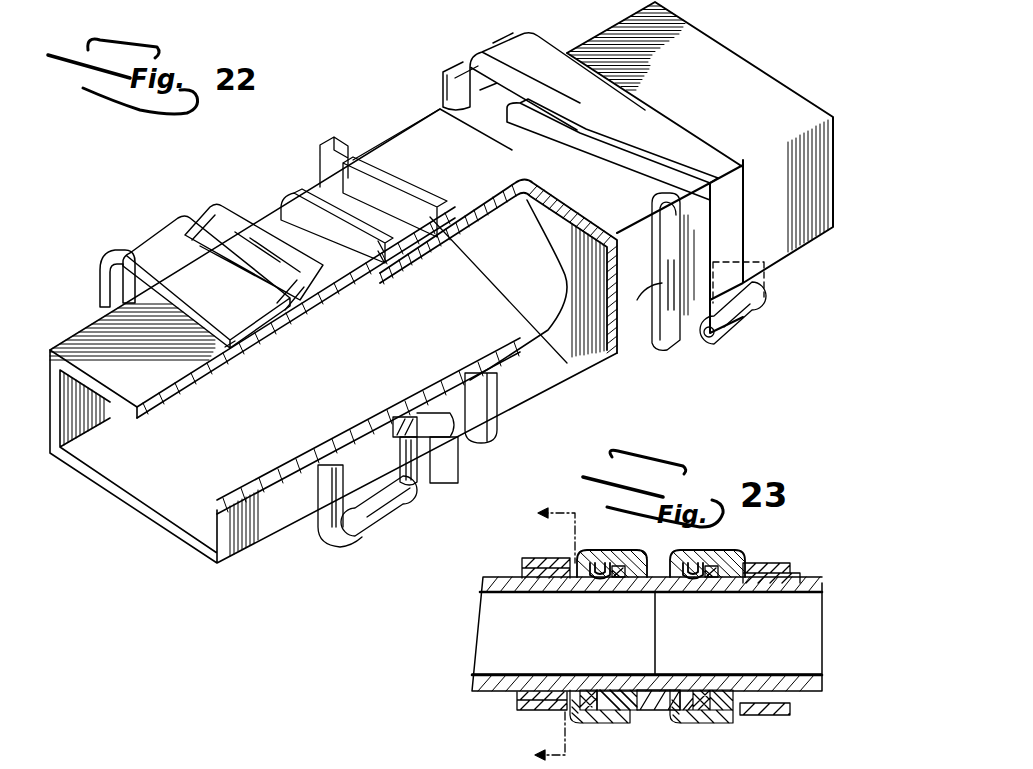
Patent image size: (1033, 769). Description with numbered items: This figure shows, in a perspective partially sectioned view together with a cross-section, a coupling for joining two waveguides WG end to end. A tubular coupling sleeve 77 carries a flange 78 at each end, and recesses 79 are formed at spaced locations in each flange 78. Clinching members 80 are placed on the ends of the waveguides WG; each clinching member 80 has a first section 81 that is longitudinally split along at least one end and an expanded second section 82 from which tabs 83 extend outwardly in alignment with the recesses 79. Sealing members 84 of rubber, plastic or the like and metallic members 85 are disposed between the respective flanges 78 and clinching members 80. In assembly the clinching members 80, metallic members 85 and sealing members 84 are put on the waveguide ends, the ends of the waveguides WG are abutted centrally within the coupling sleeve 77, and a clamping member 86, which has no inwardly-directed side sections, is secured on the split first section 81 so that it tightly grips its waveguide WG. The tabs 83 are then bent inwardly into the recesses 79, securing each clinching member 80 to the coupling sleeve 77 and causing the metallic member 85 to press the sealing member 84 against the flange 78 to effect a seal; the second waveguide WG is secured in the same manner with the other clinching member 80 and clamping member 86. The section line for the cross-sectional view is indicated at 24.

In FIG. 23, the section line 24 is at (534, 632).
In FIG. 22, the tubular coupling sleeve 77 is at (437, 127).
In FIG. 23, the tubular coupling sleeve 77 is at (645, 560).
In FIG. 22, the flange 78 is at (333, 147).
In FIG. 23, the flange 78 is at (615, 575).
In FIG. 22, the recess 79 is at (363, 173).
In FIG. 22, the clinching member 80 is at (200, 216).
In FIG. 23, the clinching member 80 is at (683, 730).
In FIG. 22, the first section 81 is at (243, 337).
In FIG. 23, the first section 81 is at (777, 707).
In FIG. 22, the second section 82 is at (432, 418).
In FIG. 23, the second section 82 is at (723, 722).
In FIG. 22, the tab 83 is at (257, 212).
In FIG. 23, the tab 83 is at (637, 575).
In FIG. 22, the sealing member 84 is at (283, 197).
In FIG. 23, the sealing member 84 is at (595, 570).
In FIG. 22, the metallic member 85 is at (307, 290).
In FIG. 23, the metallic member 85 is at (720, 587).
In FIG. 22, the clamping member 86 is at (147, 250).
In FIG. 23, the clamping member 86 is at (527, 559).
In FIG. 22, the waveguide WG is at (792, 250).
In FIG. 23, the waveguide WG is at (820, 583).